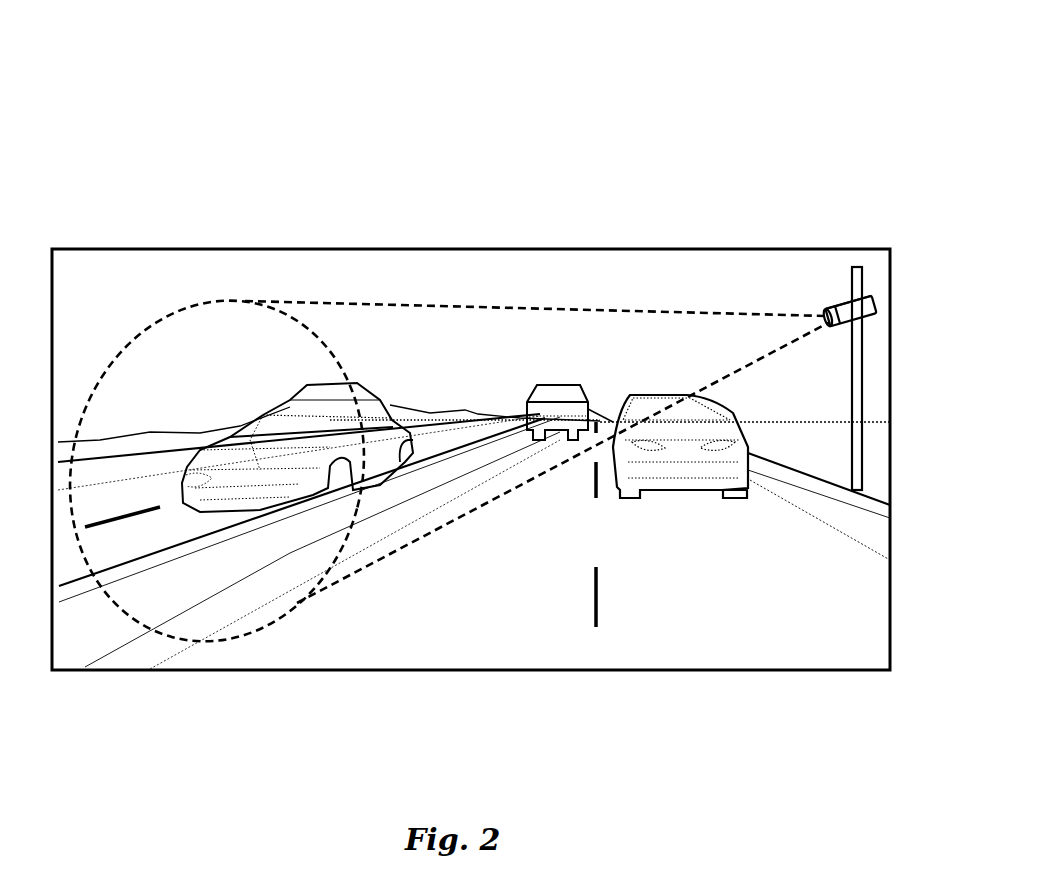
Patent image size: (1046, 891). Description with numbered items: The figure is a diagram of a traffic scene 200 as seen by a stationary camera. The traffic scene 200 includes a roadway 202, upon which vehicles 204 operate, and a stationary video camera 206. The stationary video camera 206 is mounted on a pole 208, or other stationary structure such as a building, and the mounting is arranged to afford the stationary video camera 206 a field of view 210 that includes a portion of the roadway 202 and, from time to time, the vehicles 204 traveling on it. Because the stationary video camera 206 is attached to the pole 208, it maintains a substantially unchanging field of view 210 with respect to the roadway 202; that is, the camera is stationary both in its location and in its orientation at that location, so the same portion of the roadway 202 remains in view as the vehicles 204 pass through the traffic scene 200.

The traffic scene 200 is at (483, 41).
The roadway 202 is at (448, 627).
The vehicles 204 is at (542, 285).
The stationary video camera 206 is at (878, 307).
The pole 208 is at (862, 371).
The field of view 210 is at (108, 632).